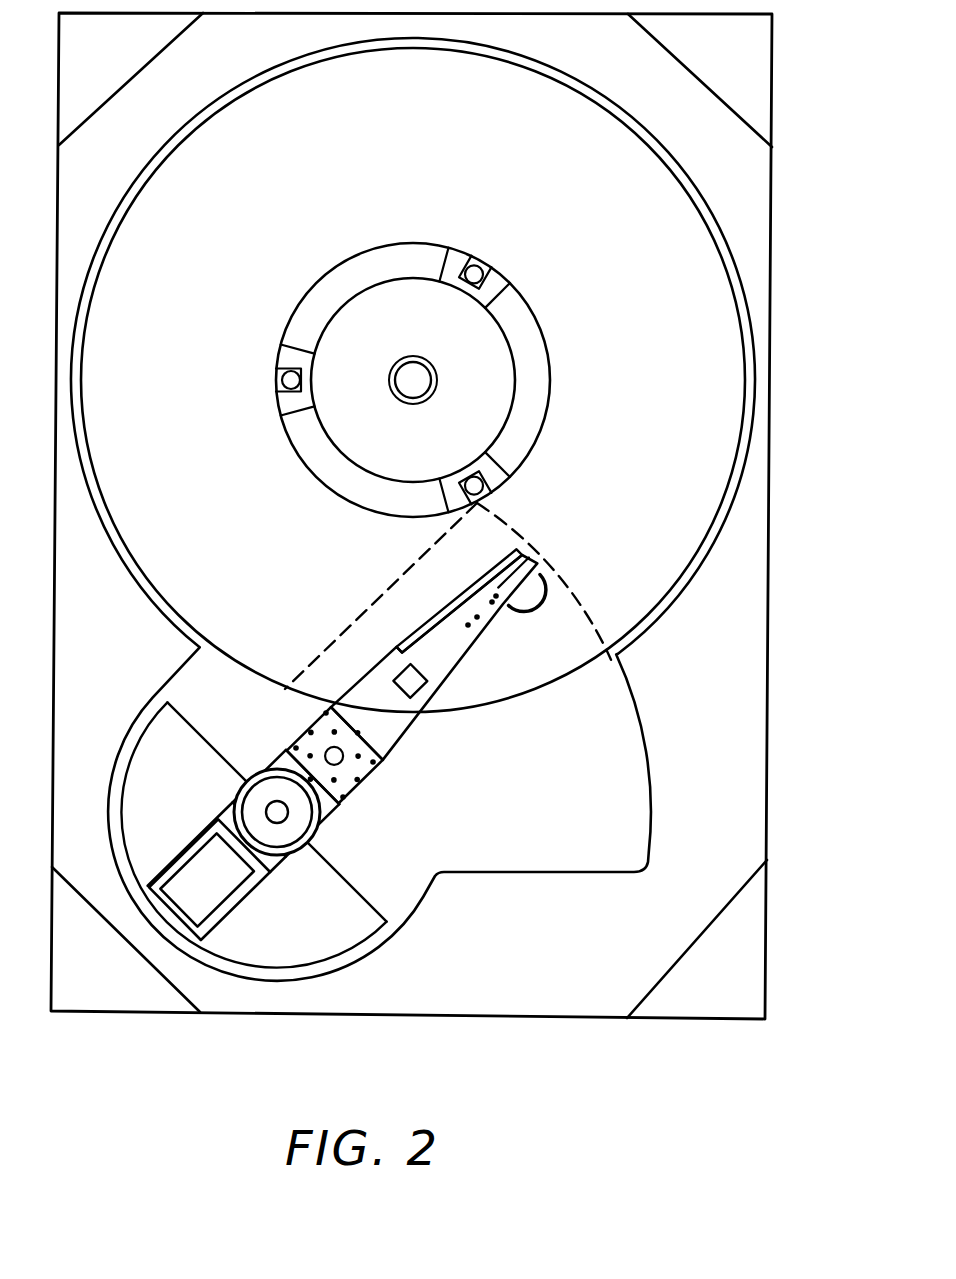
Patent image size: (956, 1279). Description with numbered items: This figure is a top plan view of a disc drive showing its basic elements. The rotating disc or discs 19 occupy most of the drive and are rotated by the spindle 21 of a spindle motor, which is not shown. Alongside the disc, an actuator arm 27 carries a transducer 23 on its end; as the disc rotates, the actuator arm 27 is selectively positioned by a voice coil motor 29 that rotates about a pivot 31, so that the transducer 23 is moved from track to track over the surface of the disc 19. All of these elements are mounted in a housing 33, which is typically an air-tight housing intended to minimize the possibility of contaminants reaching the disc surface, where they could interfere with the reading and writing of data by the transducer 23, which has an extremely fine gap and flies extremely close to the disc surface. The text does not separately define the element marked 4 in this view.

The disk drive base 4 is at (412, 552).
The rotating disc 19 is at (206, 423).
The spindle 21 is at (413, 380).
The transducer 23 is at (450, 582).
The actuator arm 27 is at (343, 747).
The voice coil motor 29 is at (316, 888).
The pivot 31 is at (340, 826).
The housing 33 is at (454, 516).